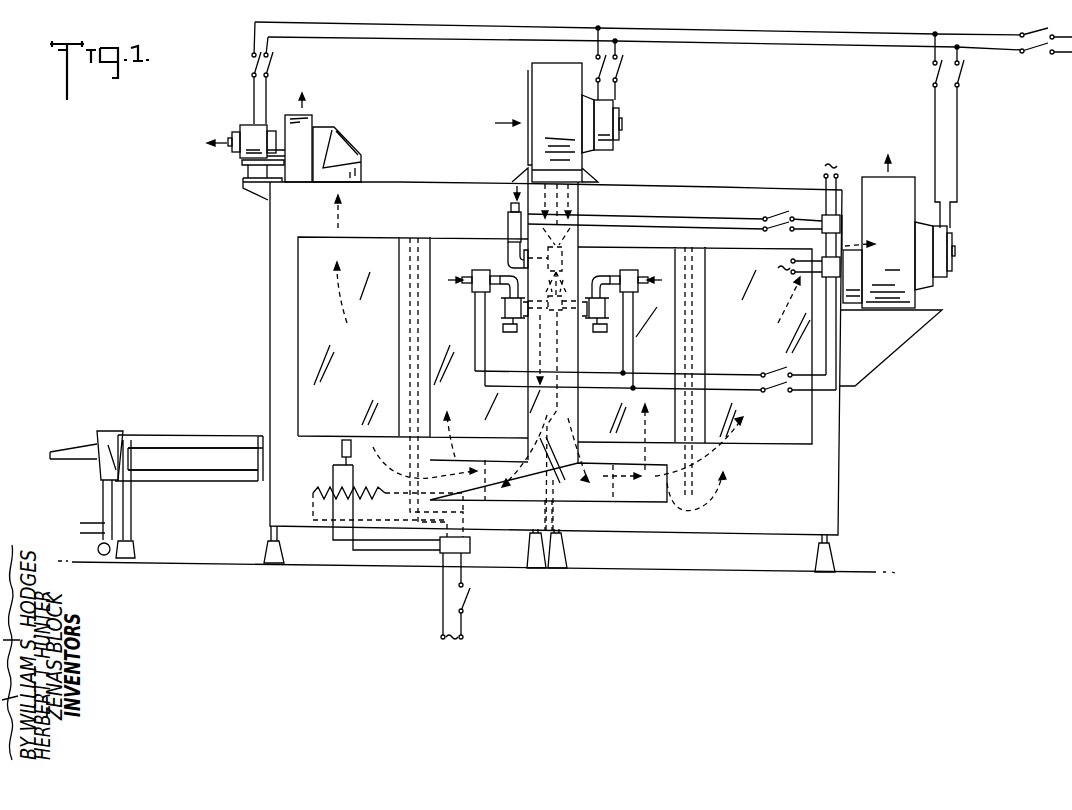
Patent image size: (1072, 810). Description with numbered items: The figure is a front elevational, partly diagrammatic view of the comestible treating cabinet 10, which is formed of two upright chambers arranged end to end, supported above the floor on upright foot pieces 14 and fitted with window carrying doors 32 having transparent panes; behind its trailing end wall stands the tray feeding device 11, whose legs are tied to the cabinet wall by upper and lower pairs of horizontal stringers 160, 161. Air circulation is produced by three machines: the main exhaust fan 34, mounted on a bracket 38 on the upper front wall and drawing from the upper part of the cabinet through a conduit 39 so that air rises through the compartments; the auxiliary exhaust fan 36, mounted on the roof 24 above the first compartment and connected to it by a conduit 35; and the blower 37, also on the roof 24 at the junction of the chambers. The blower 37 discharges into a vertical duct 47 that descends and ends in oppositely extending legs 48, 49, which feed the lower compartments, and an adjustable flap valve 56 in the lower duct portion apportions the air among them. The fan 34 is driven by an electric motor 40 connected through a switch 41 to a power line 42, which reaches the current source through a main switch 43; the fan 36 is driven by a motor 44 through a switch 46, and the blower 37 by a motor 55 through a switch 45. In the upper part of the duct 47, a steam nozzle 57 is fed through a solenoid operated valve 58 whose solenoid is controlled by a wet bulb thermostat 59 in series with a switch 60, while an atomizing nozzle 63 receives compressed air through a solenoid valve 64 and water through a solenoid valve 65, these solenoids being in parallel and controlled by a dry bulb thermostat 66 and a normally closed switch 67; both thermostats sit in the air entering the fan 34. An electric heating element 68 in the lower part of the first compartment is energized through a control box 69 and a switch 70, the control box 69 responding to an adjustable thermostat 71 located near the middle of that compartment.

The comestible treating cabinet 10 is at (677, 167).
The tray feeding device 11 is at (208, 421).
The upright foot pieces 14 is at (272, 561).
The roof 24 is at (703, 178).
The window carrying doors 32 is at (365, 249).
The main exhaust fan 34 is at (902, 180).
The conduit 35 is at (347, 149).
The auxiliary exhaust fan 36 is at (307, 124).
The blower 37 is at (550, 98).
The bracket 38 is at (903, 331).
The conduit 39 is at (851, 239).
The electric motor 40 is at (951, 242).
The switch 41 is at (962, 76).
The power line 42 is at (906, 32).
The main switch 43 is at (1040, 54).
The motor 44 is at (236, 150).
The switch 45 is at (621, 72).
The switch 46 is at (250, 65).
The vertical duct 47 is at (580, 208).
The duct leg 48 is at (498, 494).
The duct leg 49 is at (588, 500).
The motor 55 is at (612, 118).
The flap valve 56 is at (556, 440).
The steam nozzle 57 is at (566, 259).
The solenoid operated valve 58 is at (508, 219).
The wet bulb thermostat 59 is at (822, 219).
The switch 60 is at (784, 220).
The atomizing nozzle 63 is at (553, 413).
The solenoid operated valve 64 is at (484, 268).
The solenoid valve 65 is at (631, 282).
The dry bulb thermostat 66 is at (836, 256).
The normally closed switch 67 is at (782, 392).
The electric heating element 68 is at (388, 492).
The control box 69 is at (480, 541).
The switch 70 is at (468, 590).
The adjustable thermostat 71 is at (343, 438).
The upper horizontal stringers 160 is at (153, 424).
The lower horizontal stringers 161 is at (192, 481).